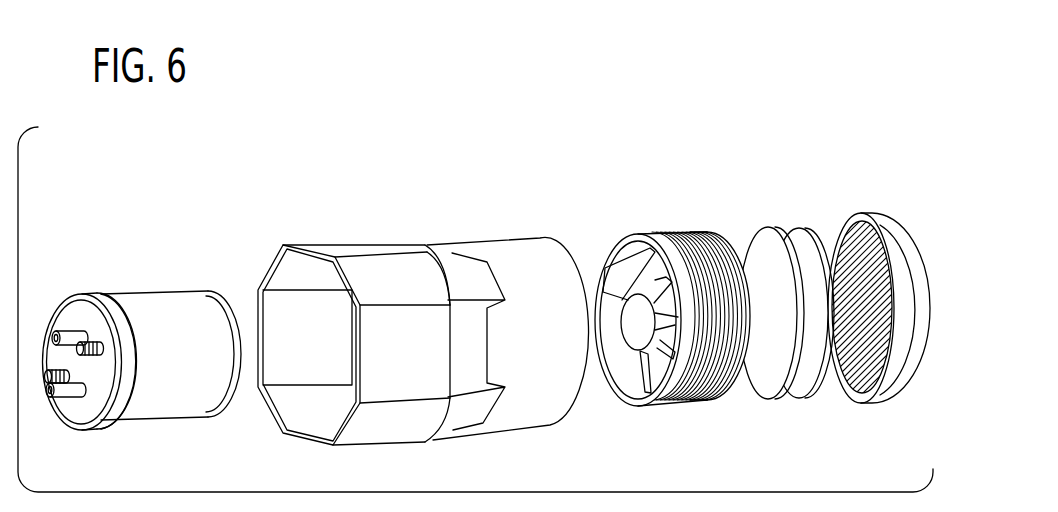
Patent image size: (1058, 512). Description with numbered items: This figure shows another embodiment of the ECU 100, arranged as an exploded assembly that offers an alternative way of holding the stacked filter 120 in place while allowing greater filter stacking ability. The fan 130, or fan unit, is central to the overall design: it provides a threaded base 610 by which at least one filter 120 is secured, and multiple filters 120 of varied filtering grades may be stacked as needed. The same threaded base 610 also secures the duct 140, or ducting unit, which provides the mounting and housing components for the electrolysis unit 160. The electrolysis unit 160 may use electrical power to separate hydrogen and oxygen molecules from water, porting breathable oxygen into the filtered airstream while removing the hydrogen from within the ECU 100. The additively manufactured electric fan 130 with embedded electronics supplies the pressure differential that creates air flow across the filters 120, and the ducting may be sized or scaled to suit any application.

The ECU 100 is at (773, 140).
The filter 120 is at (777, 230).
The fan 130 is at (672, 237).
The duct 140 is at (347, 245).
The electrolysis unit 160 is at (144, 292).
The threaded base 610 is at (690, 402).